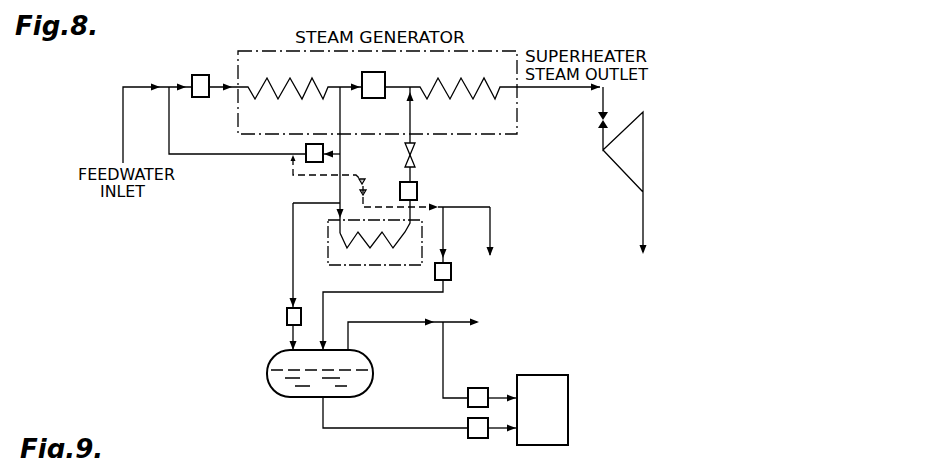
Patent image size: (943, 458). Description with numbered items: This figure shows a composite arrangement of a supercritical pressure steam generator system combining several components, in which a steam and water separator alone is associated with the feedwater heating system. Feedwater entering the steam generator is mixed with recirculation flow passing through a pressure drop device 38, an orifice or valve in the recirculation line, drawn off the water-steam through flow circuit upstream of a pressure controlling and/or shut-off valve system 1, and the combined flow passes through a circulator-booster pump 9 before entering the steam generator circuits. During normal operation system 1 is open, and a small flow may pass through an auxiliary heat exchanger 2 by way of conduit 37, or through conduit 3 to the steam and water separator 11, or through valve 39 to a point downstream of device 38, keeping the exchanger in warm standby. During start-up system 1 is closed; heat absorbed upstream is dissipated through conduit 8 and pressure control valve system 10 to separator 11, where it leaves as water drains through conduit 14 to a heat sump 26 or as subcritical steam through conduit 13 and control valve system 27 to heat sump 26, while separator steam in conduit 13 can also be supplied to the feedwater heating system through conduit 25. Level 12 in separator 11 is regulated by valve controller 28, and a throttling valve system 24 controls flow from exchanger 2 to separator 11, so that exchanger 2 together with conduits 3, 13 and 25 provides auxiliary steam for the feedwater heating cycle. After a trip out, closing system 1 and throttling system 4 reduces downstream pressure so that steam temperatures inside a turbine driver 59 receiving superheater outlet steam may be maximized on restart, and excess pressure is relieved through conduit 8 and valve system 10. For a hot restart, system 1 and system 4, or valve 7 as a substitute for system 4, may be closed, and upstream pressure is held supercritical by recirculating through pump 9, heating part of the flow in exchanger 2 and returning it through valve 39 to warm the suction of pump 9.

The pressure controlling and/or shut-off valve system 1 is at (368, 72).
The auxiliary heat exchanger 2 is at (378, 265).
The conduit 3 is at (450, 231).
The throttling system 4 is at (418, 187).
The valve 7 is at (417, 155).
The conduit 8 is at (293, 242).
The circulator-booster pump 9 is at (202, 75).
The pressure control valve system 10 is at (287, 318).
The steam and water separator 11 is at (270, 357).
The level 12 is at (355, 369).
The conduit 13 is at (378, 321).
The conduit 14 is at (375, 426).
The throttling valve system 24 is at (451, 272).
The conduit 25 is at (452, 322).
The heat sump 26 is at (554, 417).
The control valve system 27 is at (488, 367).
The valve controller 28 is at (483, 438).
The conduit 37 is at (492, 231).
The pressure drop device 38 is at (308, 136).
The valve 39 is at (365, 180).
The turbine driver 59 is at (632, 128).